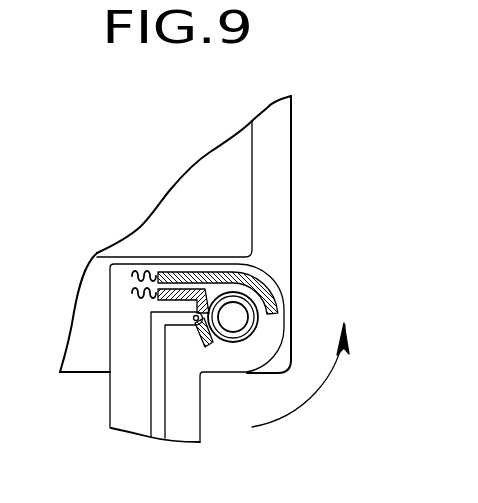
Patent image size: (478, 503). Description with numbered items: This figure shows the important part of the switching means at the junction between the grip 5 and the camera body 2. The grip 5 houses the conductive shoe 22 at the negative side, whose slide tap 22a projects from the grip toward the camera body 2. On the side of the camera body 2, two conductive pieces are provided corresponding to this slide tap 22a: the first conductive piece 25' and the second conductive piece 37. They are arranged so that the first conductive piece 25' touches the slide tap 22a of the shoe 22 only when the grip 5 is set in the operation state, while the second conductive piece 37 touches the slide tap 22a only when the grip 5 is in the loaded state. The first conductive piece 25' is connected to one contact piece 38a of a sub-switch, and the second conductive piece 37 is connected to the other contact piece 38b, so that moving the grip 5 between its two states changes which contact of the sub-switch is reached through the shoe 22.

The camera body 2 is at (225, 203).
The grip 5 is at (140, 393).
The shoe 22 is at (157, 413).
The slide tap 22a is at (201, 377).
The first conductive piece 25' is at (235, 367).
The second conductive piece 37 is at (262, 292).
The contact piece 38a is at (132, 293).
The contact piece 38b is at (132, 276).